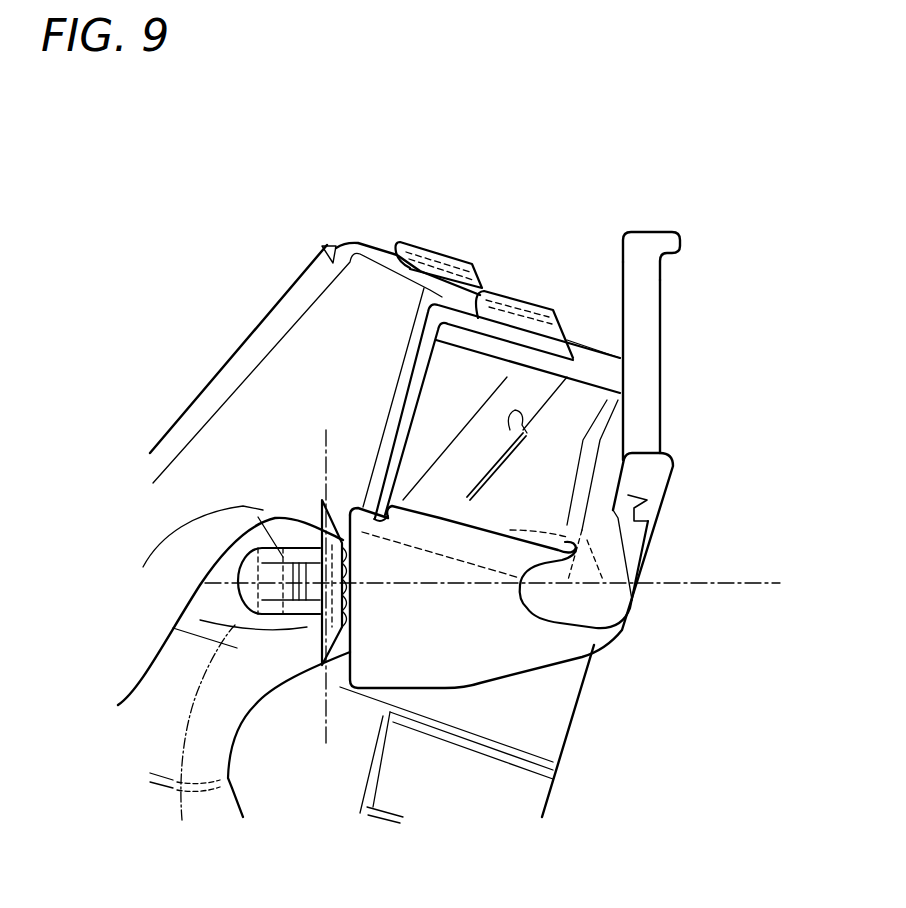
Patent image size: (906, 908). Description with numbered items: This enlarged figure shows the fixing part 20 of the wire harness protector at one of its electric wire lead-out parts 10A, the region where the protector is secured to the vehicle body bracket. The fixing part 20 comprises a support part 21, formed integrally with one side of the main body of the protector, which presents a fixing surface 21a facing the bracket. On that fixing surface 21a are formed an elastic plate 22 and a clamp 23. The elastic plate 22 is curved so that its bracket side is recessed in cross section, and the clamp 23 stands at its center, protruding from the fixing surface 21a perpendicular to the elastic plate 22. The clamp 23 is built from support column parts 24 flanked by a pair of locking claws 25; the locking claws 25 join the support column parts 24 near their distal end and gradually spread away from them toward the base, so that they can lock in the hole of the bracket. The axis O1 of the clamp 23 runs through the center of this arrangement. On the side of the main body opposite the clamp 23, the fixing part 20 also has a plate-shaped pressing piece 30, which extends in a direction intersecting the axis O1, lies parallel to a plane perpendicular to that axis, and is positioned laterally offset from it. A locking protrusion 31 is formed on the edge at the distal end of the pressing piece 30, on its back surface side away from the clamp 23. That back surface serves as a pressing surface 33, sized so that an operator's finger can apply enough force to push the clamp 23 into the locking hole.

The electric wire lead-out part 10A is at (460, 388).
The pressing piece 30 is at (616, 224).
The locking protrusion 31 is at (680, 240).
The pressing surface 33 is at (660, 322).
The fixing part 20 is at (548, 667).
The support part 21 is at (419, 665).
The fixing surface 21a is at (347, 660).
The elastic plate 22 is at (322, 497).
The clamp 23 is at (287, 592).
The support column part 24 is at (283, 557).
The locking claw 25 is at (282, 628).
The axis of the clamp O1 is at (741, 583).